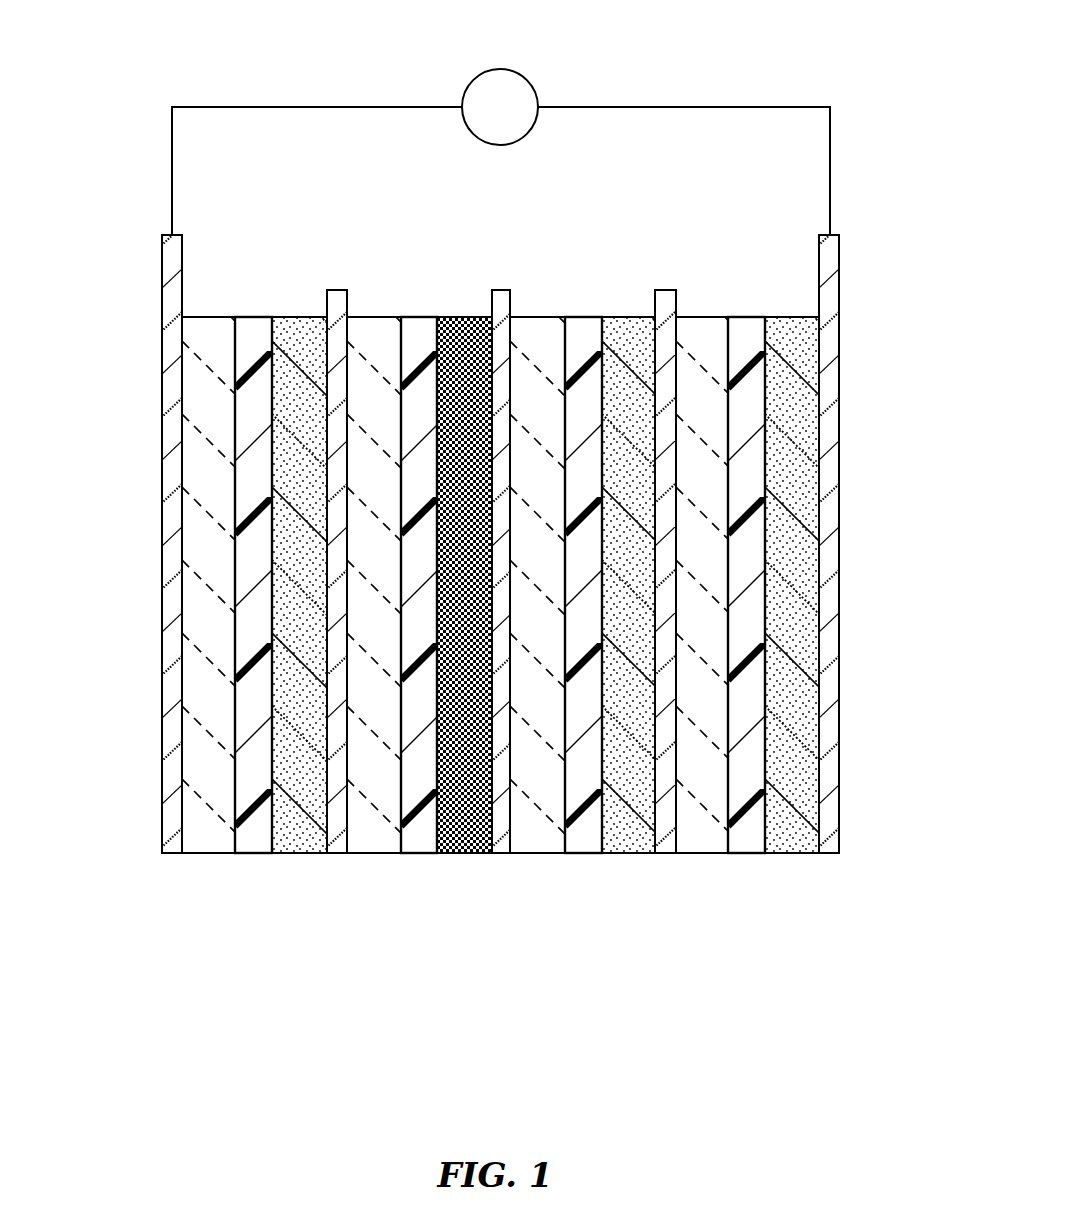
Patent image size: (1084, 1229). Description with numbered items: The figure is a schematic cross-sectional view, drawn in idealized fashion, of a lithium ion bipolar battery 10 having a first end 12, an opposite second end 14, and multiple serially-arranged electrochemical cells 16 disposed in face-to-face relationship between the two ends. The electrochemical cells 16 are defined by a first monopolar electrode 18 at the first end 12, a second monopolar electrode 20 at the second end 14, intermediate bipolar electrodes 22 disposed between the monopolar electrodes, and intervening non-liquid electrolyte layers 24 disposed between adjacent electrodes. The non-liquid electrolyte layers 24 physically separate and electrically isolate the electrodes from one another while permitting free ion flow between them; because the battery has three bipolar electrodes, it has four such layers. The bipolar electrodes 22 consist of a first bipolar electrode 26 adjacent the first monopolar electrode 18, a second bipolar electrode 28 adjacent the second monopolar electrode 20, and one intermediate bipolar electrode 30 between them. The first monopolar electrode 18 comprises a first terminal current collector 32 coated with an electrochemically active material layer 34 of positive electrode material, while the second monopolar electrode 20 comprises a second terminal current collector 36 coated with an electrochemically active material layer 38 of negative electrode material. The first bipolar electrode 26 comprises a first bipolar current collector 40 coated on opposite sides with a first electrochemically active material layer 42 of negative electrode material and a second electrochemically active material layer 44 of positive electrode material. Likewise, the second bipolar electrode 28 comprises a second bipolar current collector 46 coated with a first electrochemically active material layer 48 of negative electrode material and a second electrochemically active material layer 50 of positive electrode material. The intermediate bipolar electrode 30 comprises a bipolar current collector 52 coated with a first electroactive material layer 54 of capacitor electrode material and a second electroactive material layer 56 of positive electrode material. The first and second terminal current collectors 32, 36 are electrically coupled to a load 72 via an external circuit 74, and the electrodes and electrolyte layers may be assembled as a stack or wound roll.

The lithium ion bipolar battery 10 is at (742, 175).
The first end 12 is at (162, 700).
The second end 14 is at (850, 705).
The electrochemical cells 16 is at (327, 860).
The first monopolar electrode 18 is at (195, 307).
The second monopolar electrode 20 is at (807, 307).
The intermediate bipolar electrodes 22 is at (500, 553).
The non-liquid electrolyte layers 24 is at (248, 317).
The first bipolar electrode 26 is at (272, 257).
The second bipolar electrode 28 is at (602, 257).
The intermediate bipolar electrode 30 is at (437, 257).
The first terminal current collector 32 is at (162, 397).
The electrochemically active material layer 34 is at (162, 548).
The second terminal current collector 36 is at (839, 395).
The electrochemically active material layer 38 is at (839, 540).
The first bipolar current collector 40 is at (337, 857).
The first electrochemically active material layer 42 is at (297, 317).
The second electrochemically active material layer 44 is at (376, 317).
The second bipolar current collector 46 is at (664, 857).
The first electrochemically active material layer 48 is at (630, 317).
The second electrochemically active material layer 50 is at (704, 317).
The bipolar current collector 52 is at (502, 857).
The first electroactive material layer 54 is at (465, 317).
The second electroactive material layer 56 is at (539, 317).
The load 72 is at (504, 70).
The external circuit 74 is at (657, 107).